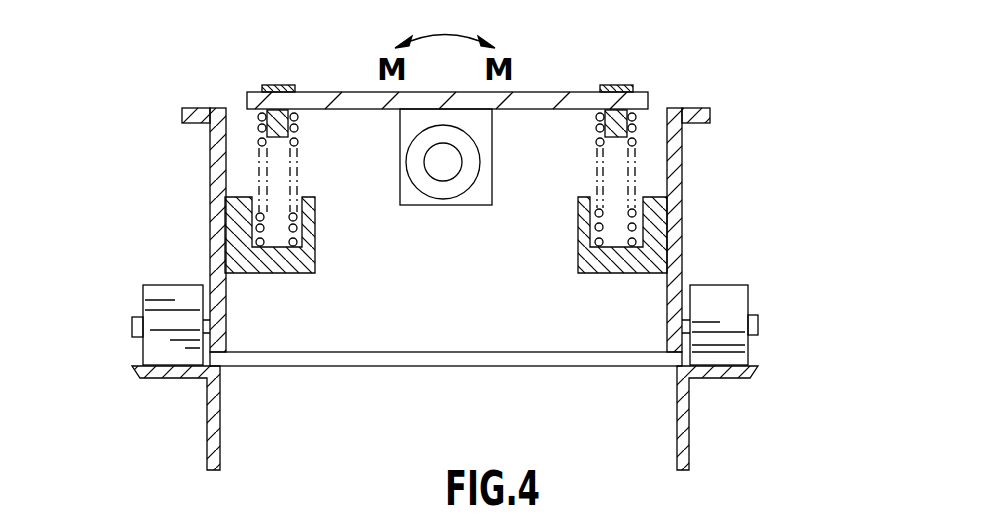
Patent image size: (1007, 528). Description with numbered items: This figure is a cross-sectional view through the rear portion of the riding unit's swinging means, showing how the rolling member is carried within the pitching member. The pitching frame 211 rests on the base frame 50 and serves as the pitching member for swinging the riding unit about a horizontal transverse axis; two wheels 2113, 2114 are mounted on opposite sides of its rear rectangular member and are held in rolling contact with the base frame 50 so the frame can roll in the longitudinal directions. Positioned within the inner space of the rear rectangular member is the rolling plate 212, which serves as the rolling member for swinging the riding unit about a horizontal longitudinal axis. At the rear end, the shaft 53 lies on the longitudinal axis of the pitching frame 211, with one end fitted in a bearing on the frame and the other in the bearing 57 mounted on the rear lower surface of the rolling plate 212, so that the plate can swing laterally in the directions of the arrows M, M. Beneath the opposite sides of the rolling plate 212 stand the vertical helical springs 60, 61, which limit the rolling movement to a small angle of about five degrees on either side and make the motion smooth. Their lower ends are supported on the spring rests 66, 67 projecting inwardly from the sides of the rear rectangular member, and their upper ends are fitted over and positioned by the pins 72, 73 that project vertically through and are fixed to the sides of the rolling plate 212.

The base frame 50 is at (723, 373).
The shaft 53 is at (438, 170).
The bearing 57 is at (463, 190).
The helical spring 60 is at (298, 160).
The helical spring 61 is at (593, 187).
The spring rest 66 is at (273, 264).
The spring rest 67 is at (612, 264).
The pin 72 is at (276, 84).
The pin 73 is at (617, 84).
The pitching frame 211 is at (677, 190).
The rolling plate 212 is at (540, 91).
The wheel 2113 is at (162, 290).
The wheel 2114 is at (740, 293).